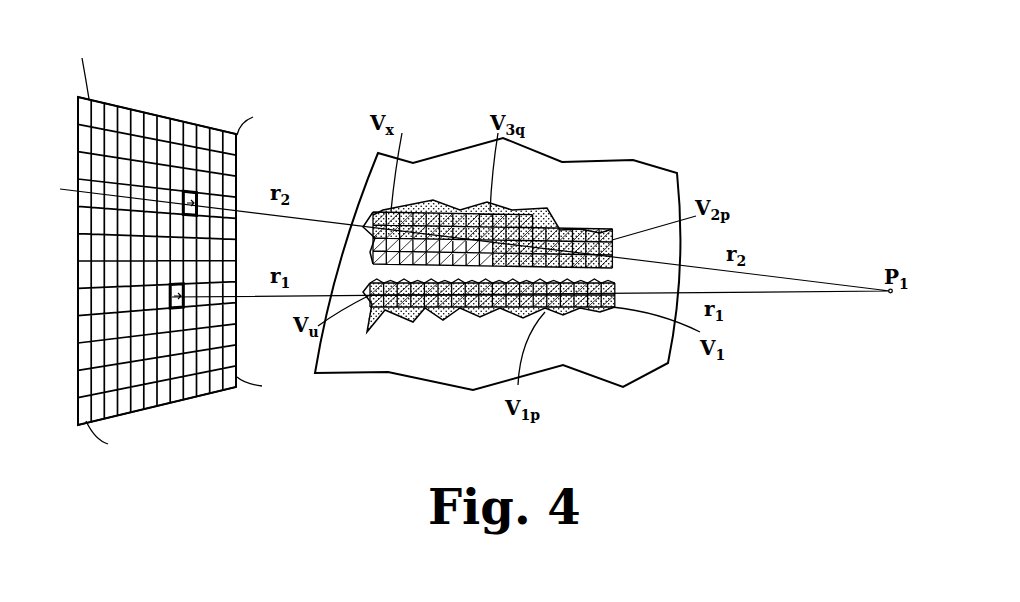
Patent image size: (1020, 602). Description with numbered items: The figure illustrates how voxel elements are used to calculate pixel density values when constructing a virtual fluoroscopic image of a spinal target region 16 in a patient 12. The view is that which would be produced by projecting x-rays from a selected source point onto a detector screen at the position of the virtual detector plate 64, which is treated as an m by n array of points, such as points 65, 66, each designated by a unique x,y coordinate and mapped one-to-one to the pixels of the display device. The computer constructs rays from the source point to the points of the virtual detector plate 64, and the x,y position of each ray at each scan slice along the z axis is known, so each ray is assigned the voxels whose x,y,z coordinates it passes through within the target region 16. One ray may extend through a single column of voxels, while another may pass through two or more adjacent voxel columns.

The patient 12 is at (660, 182).
The spinal target region 16 is at (543, 222).
The virtual detector plate 64 is at (163, 113).
The pixel 65 is at (140, 197).
The point 66 is at (176, 309).